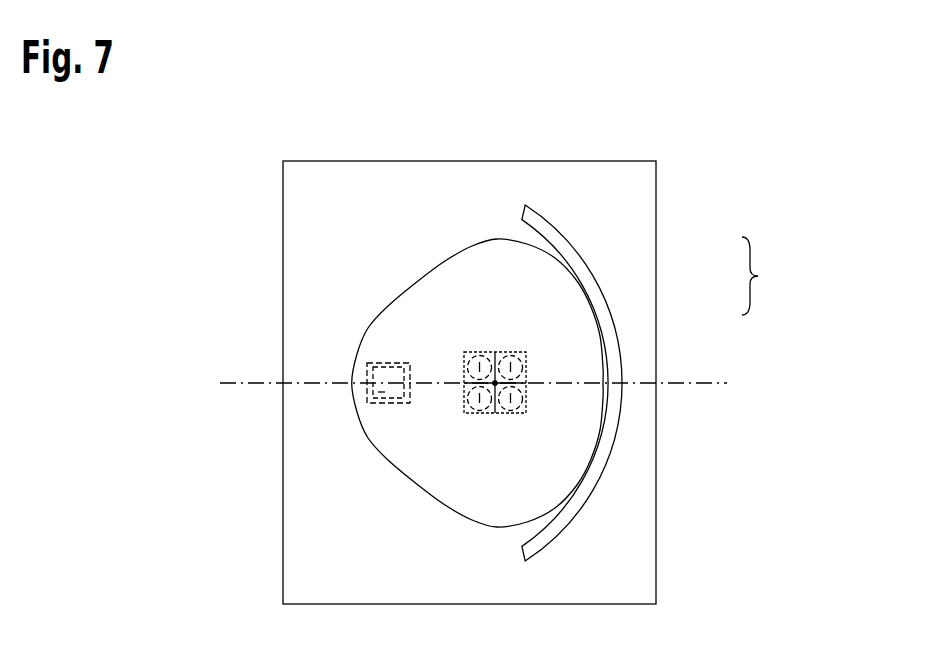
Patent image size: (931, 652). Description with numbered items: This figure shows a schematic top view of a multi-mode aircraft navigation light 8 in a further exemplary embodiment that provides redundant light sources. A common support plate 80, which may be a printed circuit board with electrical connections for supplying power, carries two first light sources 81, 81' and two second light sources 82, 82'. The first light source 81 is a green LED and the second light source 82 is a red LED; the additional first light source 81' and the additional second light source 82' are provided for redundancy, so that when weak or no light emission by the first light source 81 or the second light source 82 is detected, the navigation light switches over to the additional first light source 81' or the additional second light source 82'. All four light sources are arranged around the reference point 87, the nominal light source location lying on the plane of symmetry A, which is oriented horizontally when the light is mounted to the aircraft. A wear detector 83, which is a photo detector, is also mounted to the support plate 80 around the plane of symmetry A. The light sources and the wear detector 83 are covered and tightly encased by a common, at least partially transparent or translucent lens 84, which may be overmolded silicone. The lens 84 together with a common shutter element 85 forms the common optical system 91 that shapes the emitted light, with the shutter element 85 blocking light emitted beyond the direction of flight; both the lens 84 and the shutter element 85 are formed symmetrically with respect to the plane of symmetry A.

The multi-mode aircraft navigation light 8 is at (706, 161).
The common support plate 80 is at (452, 190).
The first light source 81 is at (516, 435).
The additional first light source 81' is at (475, 332).
The second light source 82 is at (515, 332).
The additional second light source 82' is at (482, 435).
The wear detector 83 is at (363, 391).
The lens 84 is at (533, 273).
The shutter element 85 is at (602, 307).
The reference point 87 is at (495, 383).
The common optical system 91 is at (767, 276).
The plane of symmetry A is at (716, 387).